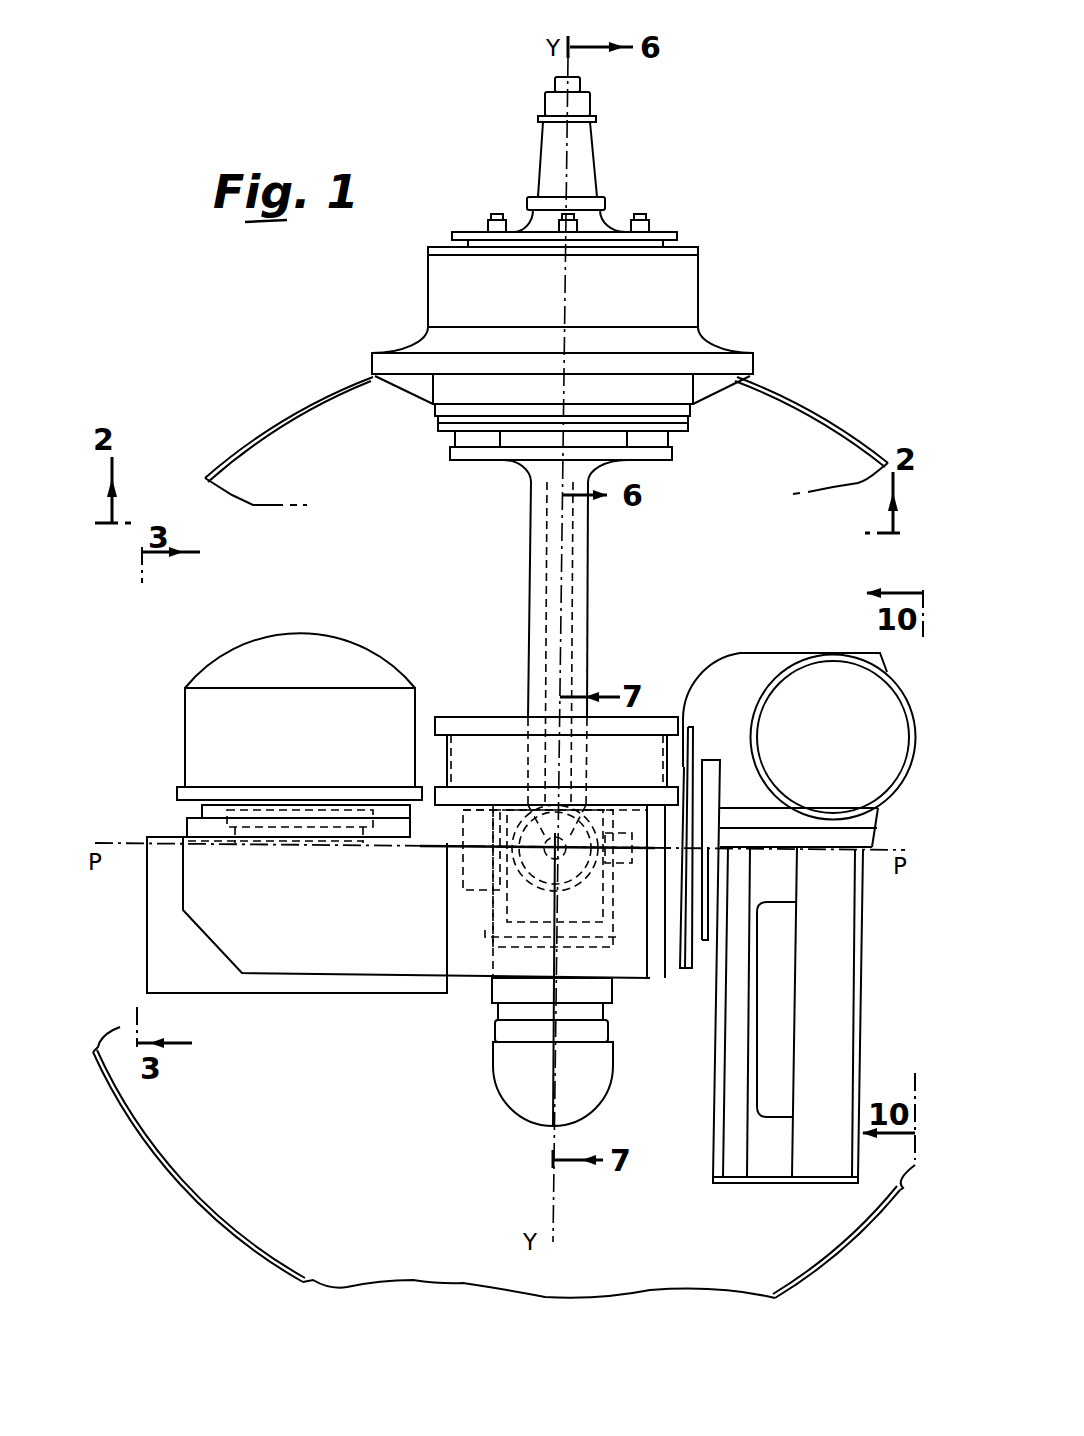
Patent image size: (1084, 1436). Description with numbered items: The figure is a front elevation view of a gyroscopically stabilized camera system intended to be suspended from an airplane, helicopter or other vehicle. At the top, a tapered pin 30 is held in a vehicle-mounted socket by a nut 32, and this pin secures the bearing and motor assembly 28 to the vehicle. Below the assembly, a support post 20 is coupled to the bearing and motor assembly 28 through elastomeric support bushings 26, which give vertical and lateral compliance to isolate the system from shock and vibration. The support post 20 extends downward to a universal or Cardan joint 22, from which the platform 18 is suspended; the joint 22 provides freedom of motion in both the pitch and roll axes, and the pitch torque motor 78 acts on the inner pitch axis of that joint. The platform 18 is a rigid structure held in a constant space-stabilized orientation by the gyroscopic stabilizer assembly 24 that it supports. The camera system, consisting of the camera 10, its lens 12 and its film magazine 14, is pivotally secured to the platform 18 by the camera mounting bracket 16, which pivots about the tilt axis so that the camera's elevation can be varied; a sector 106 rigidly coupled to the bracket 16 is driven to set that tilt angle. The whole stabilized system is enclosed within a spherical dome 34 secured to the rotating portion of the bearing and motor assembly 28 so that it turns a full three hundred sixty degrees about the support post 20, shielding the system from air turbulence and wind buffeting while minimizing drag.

The camera 10 is at (752, 653).
The lens 12 is at (887, 672).
The film magazine 14 is at (863, 925).
The camera mounting bracket 16 is at (708, 940).
The platform 18 is at (467, 968).
The support post 20 is at (592, 580).
The universal joint 22 is at (538, 843).
The gyroscopic stabilizer assembly 24 is at (300, 633).
The support bushings 26 is at (672, 442).
The bearing and motor assembly 28 is at (699, 300).
The tapered pin 30 is at (596, 167).
The nut 32 is at (587, 100).
The dome 34 is at (277, 430).
The pitch torque motor 78 is at (457, 897).
The sector 106 is at (685, 970).